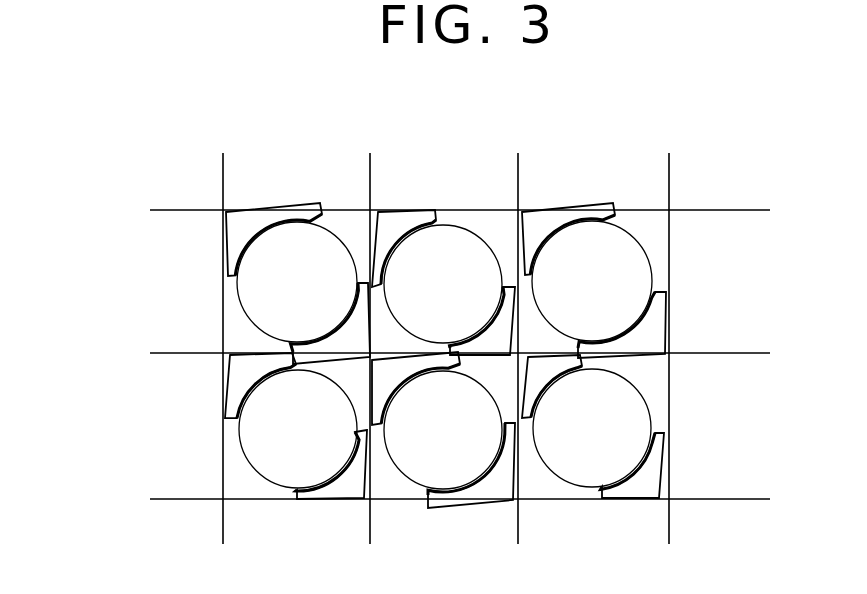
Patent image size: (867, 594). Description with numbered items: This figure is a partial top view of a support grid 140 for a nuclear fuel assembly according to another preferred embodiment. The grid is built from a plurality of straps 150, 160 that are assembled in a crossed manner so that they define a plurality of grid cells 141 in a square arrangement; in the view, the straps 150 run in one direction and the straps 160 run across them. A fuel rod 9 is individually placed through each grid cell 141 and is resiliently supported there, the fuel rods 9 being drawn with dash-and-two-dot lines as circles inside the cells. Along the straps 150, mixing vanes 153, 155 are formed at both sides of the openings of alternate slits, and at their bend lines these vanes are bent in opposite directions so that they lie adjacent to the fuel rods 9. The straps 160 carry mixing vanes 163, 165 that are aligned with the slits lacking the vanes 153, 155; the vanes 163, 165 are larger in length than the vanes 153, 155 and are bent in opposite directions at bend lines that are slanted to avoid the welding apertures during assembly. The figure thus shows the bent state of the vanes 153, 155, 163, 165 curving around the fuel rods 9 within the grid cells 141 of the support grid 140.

The support grid 140 is at (115, 375).
The strap 150 is at (157, 213).
The strap 160 is at (226, 173).
The grid cell 141 is at (345, 233).
The mixing vane 163 is at (240, 231).
The mixing vane 153 is at (542, 370).
The mixing vane 165 is at (354, 343).
The mixing vane 155 is at (493, 340).
The fuel rod 9 is at (238, 296).